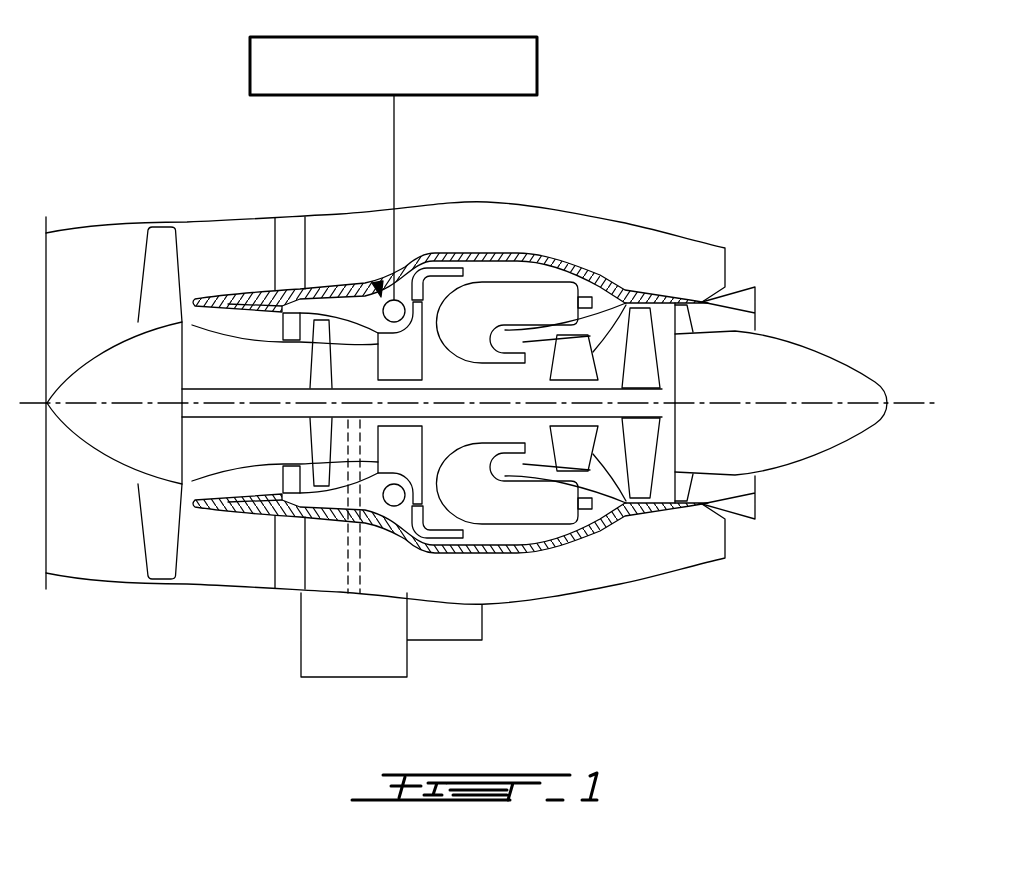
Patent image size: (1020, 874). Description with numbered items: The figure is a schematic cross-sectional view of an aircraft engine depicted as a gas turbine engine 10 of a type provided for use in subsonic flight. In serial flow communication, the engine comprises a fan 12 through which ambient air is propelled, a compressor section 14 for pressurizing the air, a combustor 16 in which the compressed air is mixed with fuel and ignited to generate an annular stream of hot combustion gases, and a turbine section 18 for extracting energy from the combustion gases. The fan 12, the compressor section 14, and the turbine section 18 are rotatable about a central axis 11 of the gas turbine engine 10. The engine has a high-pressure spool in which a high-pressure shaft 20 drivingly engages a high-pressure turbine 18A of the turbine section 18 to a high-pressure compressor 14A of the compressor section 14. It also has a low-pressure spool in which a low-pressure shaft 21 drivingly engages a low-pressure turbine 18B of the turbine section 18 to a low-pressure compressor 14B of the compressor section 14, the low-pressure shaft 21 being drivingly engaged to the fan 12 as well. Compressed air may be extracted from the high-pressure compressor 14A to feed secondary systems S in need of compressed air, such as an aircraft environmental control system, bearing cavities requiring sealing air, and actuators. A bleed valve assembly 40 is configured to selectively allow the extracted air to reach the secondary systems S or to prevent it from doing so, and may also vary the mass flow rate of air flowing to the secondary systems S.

The gas turbine engine 10 is at (647, 116).
The central axis 11 is at (916, 403).
The fan 12 is at (157, 518).
The compressor section 14 is at (348, 330).
The high-pressure compressor 14A is at (340, 488).
The low-pressure compressor 14B is at (277, 463).
The combustor 16 is at (510, 297).
The turbine section 18 is at (607, 453).
The high-pressure turbine 18A is at (577, 358).
The low-pressure turbine 18B is at (640, 333).
The high-pressure shaft 20 is at (447, 427).
The low-pressure shaft 21 is at (232, 389).
The bleed valve assembly 40 is at (376, 284).
The secondary systems S is at (537, 65).